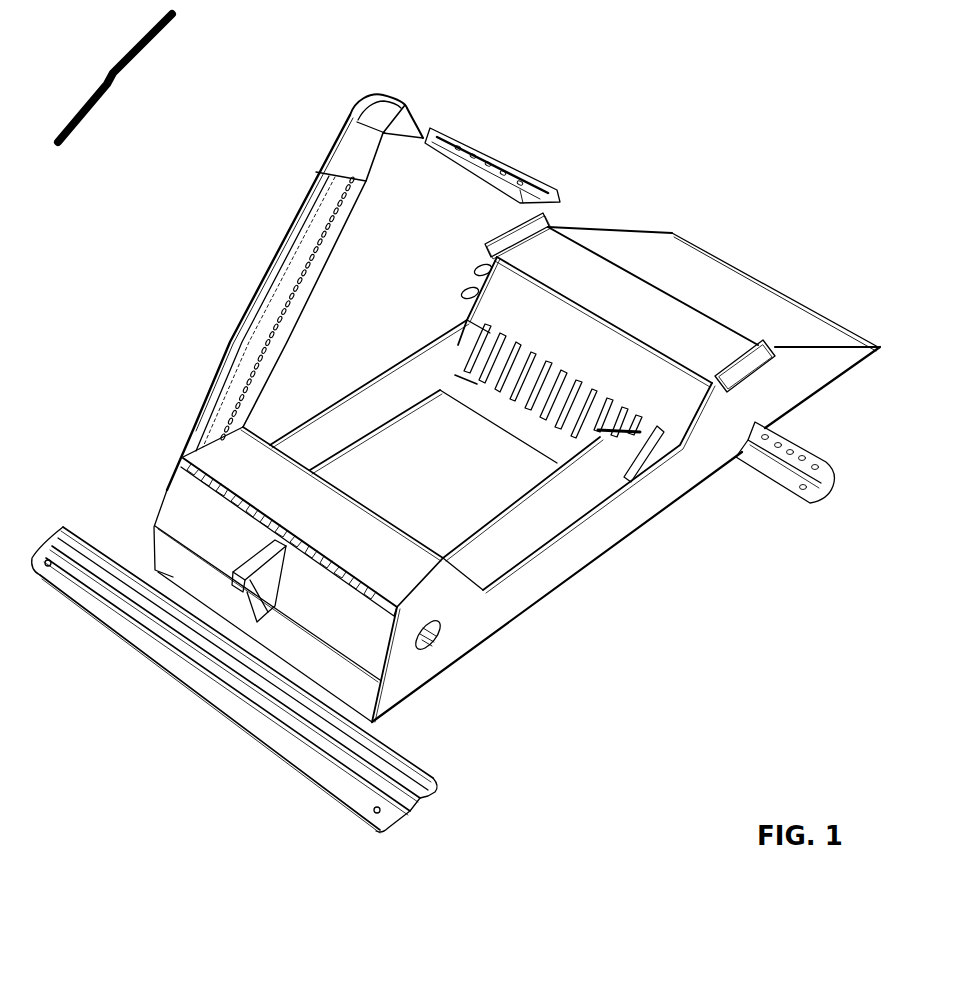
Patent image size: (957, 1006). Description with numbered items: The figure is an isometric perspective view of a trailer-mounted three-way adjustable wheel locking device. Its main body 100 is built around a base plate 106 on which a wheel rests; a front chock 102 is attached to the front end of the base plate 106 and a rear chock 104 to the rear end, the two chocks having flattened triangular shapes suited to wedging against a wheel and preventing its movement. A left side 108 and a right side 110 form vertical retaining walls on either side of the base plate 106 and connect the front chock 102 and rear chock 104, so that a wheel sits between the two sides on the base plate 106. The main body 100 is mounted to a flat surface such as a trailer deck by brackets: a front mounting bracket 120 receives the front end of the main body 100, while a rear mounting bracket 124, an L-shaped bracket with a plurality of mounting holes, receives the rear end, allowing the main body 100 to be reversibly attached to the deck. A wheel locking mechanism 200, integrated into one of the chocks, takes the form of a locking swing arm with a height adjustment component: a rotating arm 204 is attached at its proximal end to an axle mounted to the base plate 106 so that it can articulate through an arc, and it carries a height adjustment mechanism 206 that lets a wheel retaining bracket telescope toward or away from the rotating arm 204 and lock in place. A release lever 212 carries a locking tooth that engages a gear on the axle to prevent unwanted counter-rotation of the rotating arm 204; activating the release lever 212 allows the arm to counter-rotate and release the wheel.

The main body 100 is at (114, 78).
The front chock 102 is at (458, 622).
The rear chock 104 is at (672, 267).
The base plate 106 is at (367, 478).
The left side 108 is at (595, 543).
The right side 110 is at (417, 377).
The front mounting bracket 120 is at (292, 747).
The rear mounting bracket 124 is at (830, 483).
The wheel locking mechanism 200 is at (385, 107).
The rotating arm 204 is at (218, 370).
The height adjustment mechanism 206 is at (302, 270).
The release lever 212 is at (250, 563).